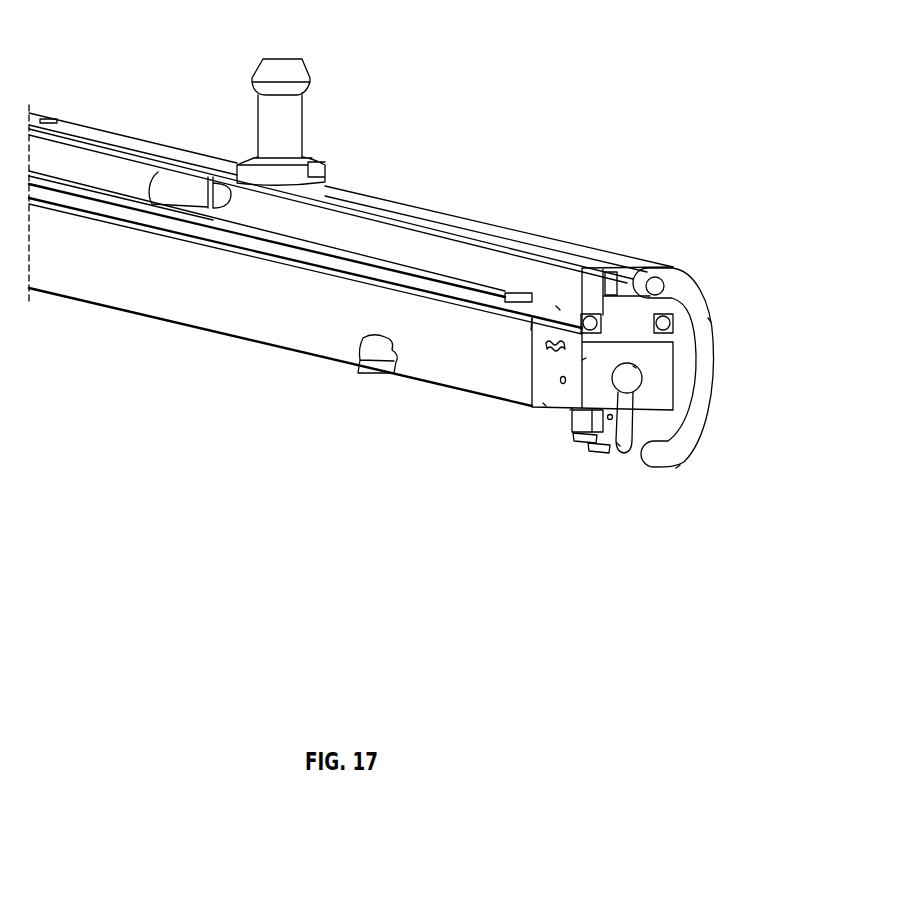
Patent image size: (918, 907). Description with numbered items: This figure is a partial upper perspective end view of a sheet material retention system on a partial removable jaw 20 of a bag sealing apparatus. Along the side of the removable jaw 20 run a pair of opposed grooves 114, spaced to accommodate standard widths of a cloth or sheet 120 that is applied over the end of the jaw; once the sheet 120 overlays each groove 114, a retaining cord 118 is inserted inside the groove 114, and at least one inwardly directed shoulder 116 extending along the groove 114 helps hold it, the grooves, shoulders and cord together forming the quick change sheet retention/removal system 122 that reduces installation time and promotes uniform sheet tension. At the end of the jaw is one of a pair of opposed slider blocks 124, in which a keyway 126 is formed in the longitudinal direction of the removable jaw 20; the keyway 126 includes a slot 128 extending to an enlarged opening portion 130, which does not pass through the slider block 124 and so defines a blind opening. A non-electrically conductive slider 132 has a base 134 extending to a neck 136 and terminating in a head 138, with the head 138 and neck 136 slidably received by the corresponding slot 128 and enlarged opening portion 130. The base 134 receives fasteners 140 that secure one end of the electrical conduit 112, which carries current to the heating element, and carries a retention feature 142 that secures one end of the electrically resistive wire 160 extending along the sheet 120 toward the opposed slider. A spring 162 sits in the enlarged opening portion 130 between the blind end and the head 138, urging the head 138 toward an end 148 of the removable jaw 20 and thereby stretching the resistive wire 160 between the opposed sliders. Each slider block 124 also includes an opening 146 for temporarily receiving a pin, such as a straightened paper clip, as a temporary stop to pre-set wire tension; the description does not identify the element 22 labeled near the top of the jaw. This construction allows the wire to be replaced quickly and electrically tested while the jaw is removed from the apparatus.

The removable jaw 20 is at (432, 207).
The knob 22 is at (300, 112).
The electrical conduit 112 is at (680, 466).
The grooves 114 is at (594, 312).
The inwardly directed shoulder 116 is at (708, 318).
The retaining cord 118 is at (556, 306).
The sheet 120 is at (315, 360).
The quick change sheet retention/removal system 122 is at (262, 466).
The slider block 124 is at (533, 363).
The keyway 126 is at (737, 429).
The slot 128 is at (600, 450).
The enlarged opening portion 130 is at (642, 372).
The slider 132 is at (567, 433).
The base 134 is at (568, 417).
The neck 136 is at (617, 443).
The head 138 is at (633, 366).
The fasteners 140 is at (583, 450).
The retention feature 142 is at (570, 410).
The opening 146 is at (543, 403).
The end 148 is at (582, 360).
The electrically resistive wire 160 is at (370, 358).
The spring 162 is at (531, 320).